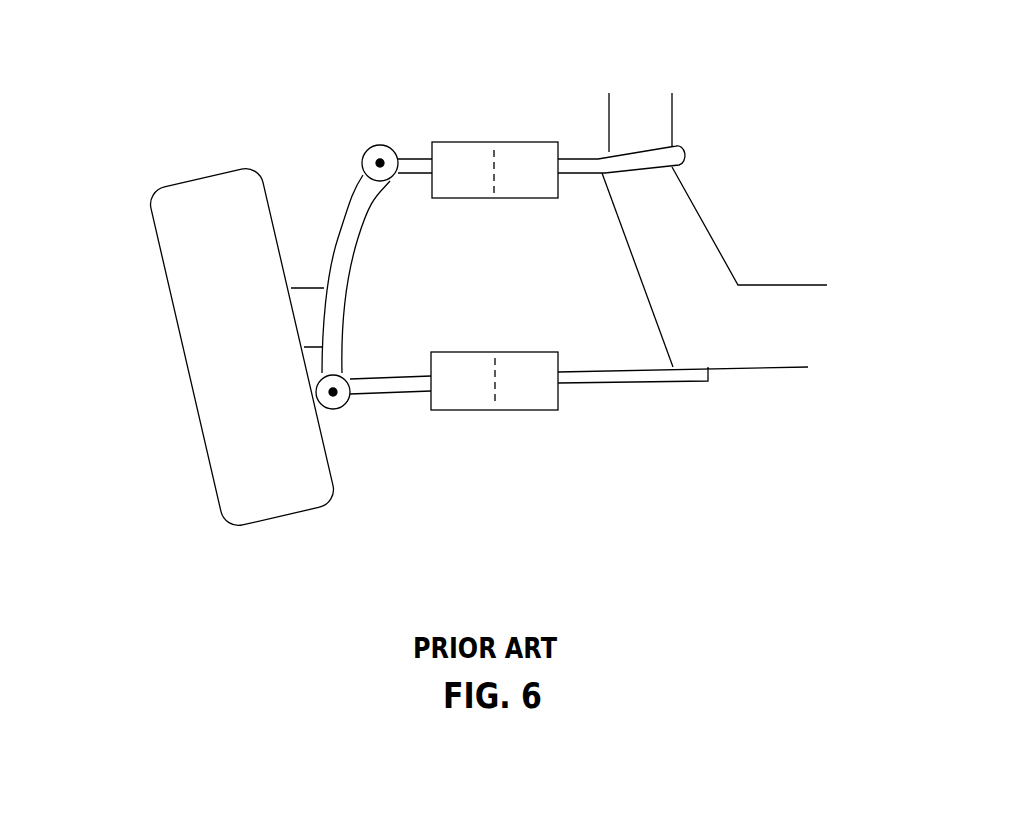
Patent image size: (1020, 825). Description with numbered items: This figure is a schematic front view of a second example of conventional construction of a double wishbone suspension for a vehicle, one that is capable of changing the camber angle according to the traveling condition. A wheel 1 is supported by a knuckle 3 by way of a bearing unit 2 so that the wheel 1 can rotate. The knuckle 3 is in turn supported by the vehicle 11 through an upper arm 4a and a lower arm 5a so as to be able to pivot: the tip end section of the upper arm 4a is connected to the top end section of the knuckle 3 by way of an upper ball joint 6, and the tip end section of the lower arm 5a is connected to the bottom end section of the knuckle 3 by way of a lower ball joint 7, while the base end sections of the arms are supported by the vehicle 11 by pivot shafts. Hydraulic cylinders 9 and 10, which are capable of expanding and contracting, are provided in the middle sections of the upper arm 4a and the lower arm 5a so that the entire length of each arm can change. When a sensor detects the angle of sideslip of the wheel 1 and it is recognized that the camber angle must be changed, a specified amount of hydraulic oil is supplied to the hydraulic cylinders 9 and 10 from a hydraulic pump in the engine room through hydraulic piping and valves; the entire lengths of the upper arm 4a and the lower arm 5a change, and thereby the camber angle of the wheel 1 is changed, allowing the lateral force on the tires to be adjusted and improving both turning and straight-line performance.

The wheel 1 is at (197, 243).
The bearing unit 2 is at (307, 310).
The knuckle 3 is at (350, 214).
The upper arm 4a is at (578, 160).
The lower arm 5a is at (610, 380).
The upper ball joint 6 is at (383, 143).
The lower ball joint 7 is at (347, 411).
The hydraulic cylinder 9 is at (474, 142).
The hydraulic cylinder 10 is at (465, 395).
The vehicle 11 is at (682, 242).